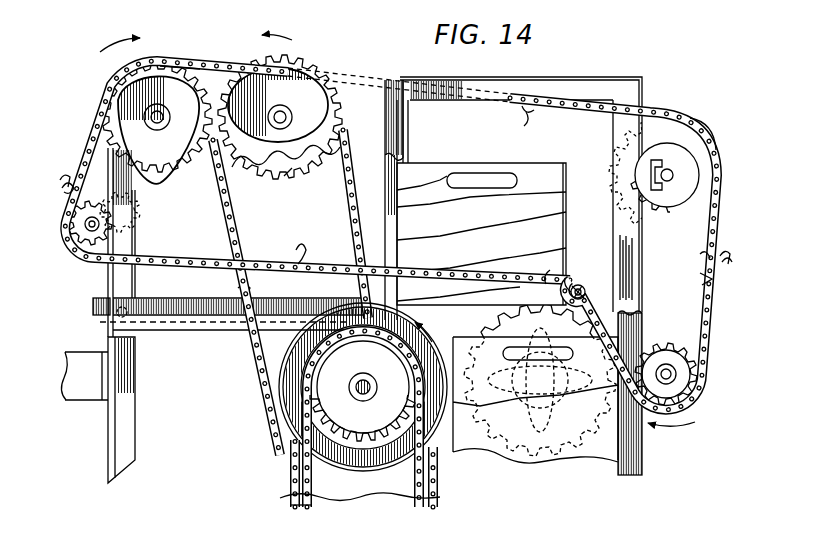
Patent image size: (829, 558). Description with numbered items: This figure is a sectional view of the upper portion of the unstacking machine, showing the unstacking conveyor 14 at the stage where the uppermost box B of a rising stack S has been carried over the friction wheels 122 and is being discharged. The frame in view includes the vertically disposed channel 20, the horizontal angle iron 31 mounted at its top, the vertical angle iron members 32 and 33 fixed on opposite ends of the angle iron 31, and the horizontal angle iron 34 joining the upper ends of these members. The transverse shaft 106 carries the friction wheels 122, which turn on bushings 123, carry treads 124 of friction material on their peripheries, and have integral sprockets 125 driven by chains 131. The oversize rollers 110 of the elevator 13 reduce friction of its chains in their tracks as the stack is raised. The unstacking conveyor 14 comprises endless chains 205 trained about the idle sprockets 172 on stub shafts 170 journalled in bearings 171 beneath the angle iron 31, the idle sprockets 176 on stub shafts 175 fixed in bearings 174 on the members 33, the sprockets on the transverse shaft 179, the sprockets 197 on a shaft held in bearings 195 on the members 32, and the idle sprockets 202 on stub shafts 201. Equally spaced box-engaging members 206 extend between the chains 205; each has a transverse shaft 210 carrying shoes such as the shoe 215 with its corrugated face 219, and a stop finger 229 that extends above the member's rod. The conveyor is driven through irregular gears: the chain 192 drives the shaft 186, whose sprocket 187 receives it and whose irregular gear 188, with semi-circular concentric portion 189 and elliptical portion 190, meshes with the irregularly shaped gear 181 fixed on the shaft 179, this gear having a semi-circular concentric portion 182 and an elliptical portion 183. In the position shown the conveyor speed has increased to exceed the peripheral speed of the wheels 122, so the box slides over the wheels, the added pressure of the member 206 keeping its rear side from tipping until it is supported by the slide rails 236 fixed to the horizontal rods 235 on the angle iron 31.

The irregularly shaped gear 181 is at (173, 70).
The semi-circular concentric portion 182 is at (177, 72).
The elliptical portion 183 is at (180, 177).
The transverse shaft 179 is at (156, 128).
The irregular gear 188 is at (283, 56).
The transverse shaft 186 is at (280, 113).
The semi-circular concentric portion 189 is at (320, 62).
The elliptical portion 190 is at (277, 157).
The sprocket 187 is at (288, 185).
The chain 192 is at (233, 232).
The box-engaging member 206 is at (300, 252).
The corrugated face 219 is at (68, 178).
The idle sprocket 176 is at (70, 207).
The stub shaft 175 is at (84, 226).
The bearing 174 is at (103, 218).
The vertical angle iron member 33 is at (118, 278).
The horizontal rod 235 is at (110, 312).
The slide rail 236 is at (245, 291).
The horizontal angle iron 31 is at (180, 325).
The horizontal angle iron 34 is at (575, 85).
The uppermost box B is at (443, 172).
The stop finger 229 is at (527, 112).
The endless chain 205 is at (579, 112).
The unstacking conveyor 14 is at (690, 118).
The bearing 195 is at (668, 167).
The sprocket 197 is at (696, 172).
The vertical angle iron member 32 is at (628, 226).
The box-engaging shoe 215 is at (706, 278).
The transverse shaft 210 is at (590, 291).
The stub shaft 201 is at (666, 362).
The idle sprocket 202 is at (690, 347).
The transverse shaft 106 is at (364, 377).
The bushing 123 is at (361, 394).
The friction wheel 122 is at (293, 378).
The tread 124 is at (283, 412).
The sprocket 125 is at (322, 425).
The oversize roller 110 is at (292, 470).
The chain 131 is at (310, 510).
The vertically disposed channel 20 is at (380, 493).
The elevator 13 is at (440, 505).
The bearing 171 is at (528, 373).
The stub shaft 170 is at (541, 358).
The idle sprocket 172 is at (525, 438).
The stack S is at (577, 468).